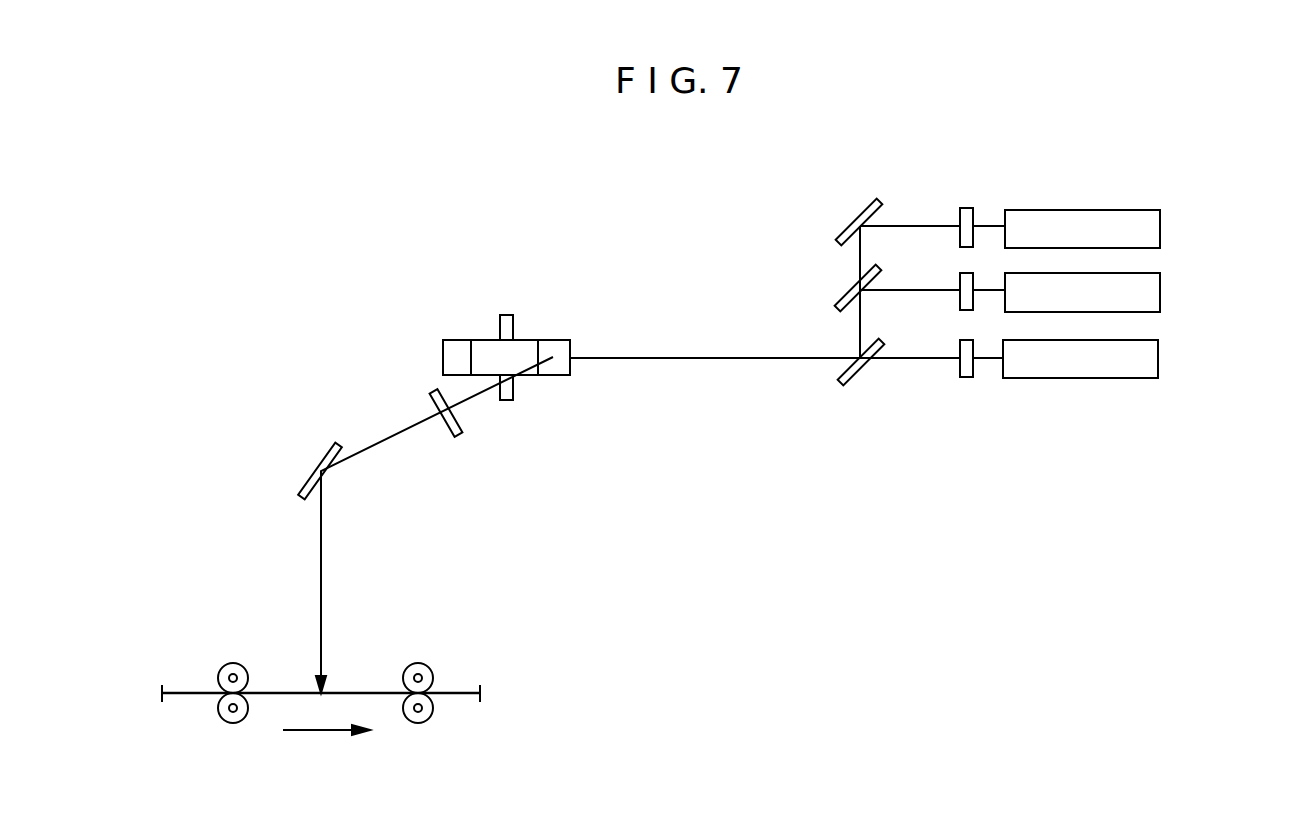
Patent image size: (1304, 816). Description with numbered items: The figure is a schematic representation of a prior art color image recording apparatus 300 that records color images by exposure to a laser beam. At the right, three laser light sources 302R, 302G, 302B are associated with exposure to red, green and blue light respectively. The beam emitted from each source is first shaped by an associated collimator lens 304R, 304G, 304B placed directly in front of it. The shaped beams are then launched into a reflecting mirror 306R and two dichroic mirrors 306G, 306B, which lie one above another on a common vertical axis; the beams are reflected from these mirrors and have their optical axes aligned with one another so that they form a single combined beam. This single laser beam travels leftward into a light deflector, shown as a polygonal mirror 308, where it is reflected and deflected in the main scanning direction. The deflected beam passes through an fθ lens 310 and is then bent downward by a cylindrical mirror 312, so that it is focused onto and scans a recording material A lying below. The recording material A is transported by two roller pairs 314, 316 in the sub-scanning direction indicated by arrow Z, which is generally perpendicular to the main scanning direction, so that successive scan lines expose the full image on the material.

The color image recording apparatus 300 is at (703, 472).
The laser light source 302R is at (1160, 227).
The laser light source 302G is at (1160, 291).
The laser light source 302B is at (1150, 360).
The collimator lens 304R is at (970, 212).
The collimator lens 304G is at (962, 305).
The collimator lens 304B is at (967, 378).
The reflecting mirror 306R is at (855, 222).
The dichroic mirror 306G is at (852, 290).
The dichroic mirror 306B is at (860, 383).
The polygonal mirror 308 is at (557, 368).
The fθ lens 310 is at (455, 433).
The cylindrical mirror 312 is at (313, 465).
The roller pair 314 is at (417, 664).
The roller pair 316 is at (238, 664).
The recording material A is at (447, 698).
The sub-scanning direction arrow Z is at (326, 748).